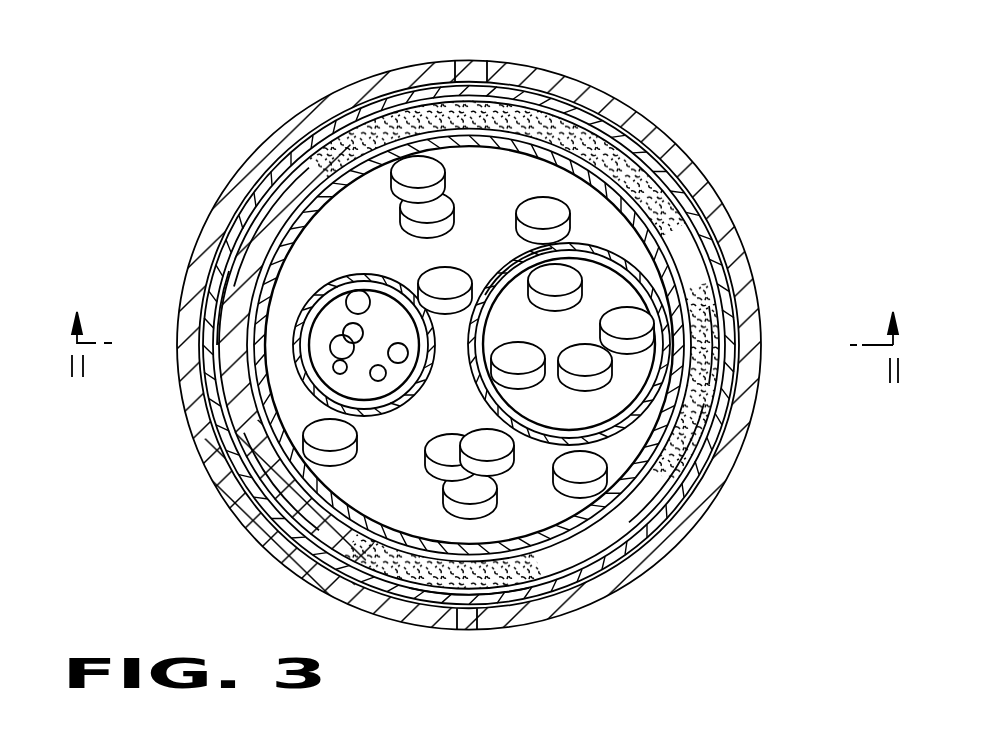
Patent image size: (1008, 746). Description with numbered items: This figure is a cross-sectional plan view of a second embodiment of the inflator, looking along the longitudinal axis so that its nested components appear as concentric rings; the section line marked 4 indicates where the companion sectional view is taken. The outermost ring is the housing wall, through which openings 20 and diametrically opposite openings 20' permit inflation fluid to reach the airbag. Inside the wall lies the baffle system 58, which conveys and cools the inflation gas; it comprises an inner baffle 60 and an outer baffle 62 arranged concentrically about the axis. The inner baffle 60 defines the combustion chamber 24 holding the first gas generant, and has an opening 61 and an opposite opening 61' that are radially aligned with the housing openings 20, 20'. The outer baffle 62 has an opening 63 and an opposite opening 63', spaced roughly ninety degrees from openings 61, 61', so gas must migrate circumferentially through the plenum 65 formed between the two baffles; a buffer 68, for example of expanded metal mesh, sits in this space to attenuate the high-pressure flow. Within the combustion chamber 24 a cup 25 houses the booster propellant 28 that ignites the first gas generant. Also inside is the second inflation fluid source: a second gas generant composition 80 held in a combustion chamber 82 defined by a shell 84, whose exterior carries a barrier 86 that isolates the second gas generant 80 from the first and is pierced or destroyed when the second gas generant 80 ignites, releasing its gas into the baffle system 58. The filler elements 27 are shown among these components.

The openings 20 is at (469, 316).
The openings 20' is at (501, 646).
The opening 61 is at (469, 304).
The opening 61' is at (464, 628).
The combustion chamber 24 is at (566, 106).
The inner baffle 60 is at (652, 203).
The buffer 68 is at (278, 214).
The opening 63' is at (172, 296).
The shell 84 is at (668, 280).
The opening 63 is at (771, 323).
The cup 25 is at (296, 345).
The booster propellant 28 is at (402, 358).
The combustion chamber 82 is at (642, 368).
The barrier 86 is at (490, 281).
The second gas generant composition 80 is at (527, 384).
The filler elements 27 is at (452, 215).
The baffle system 58 is at (215, 421).
The outer baffle 62 is at (265, 478).
The plenum 65 is at (675, 462).
The section line 4- 4 is at (473, 329).